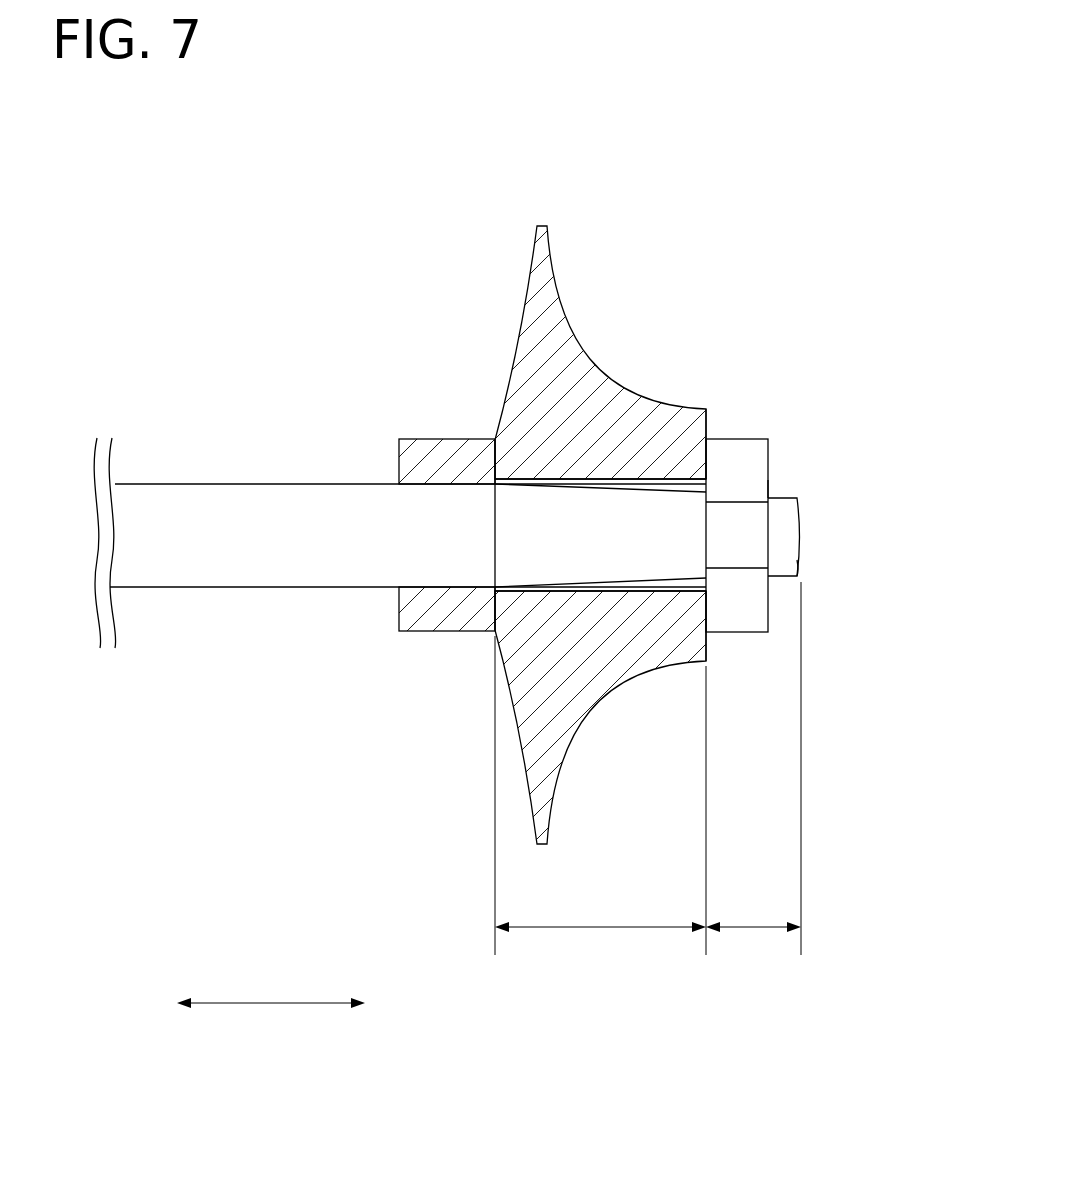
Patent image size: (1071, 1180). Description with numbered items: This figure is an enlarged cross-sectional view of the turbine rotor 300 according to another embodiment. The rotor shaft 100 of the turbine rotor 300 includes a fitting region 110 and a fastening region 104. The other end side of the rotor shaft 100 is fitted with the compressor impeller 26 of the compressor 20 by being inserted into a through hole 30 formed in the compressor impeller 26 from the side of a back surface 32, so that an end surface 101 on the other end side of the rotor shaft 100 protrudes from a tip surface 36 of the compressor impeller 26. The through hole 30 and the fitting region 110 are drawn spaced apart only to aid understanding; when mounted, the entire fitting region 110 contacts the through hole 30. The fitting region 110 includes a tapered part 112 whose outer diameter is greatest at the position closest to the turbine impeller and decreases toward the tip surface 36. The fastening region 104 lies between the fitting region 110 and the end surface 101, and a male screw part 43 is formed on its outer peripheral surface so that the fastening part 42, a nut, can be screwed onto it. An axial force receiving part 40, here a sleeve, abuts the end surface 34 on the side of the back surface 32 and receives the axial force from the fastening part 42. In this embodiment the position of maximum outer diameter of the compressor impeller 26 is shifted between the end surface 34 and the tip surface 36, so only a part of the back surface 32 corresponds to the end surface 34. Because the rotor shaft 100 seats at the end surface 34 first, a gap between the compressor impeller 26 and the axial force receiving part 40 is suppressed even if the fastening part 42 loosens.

The turbine rotor 300 is at (860, 199).
The compressor 20 is at (631, 292).
The compressor impeller 26 is at (573, 392).
The through hole 30 is at (676, 483).
The back surface 32 is at (523, 748).
The end surface 34 is at (490, 608).
The tip surface 36 is at (707, 645).
The axial force receiving part 40 is at (432, 455).
The fastening part 42 is at (737, 439).
The male screw part 43 is at (777, 489).
The rotor shaft 100 is at (250, 568).
The end surface 101 is at (802, 570).
The fastening region 104 is at (788, 540).
The fitting region 110 is at (636, 537).
The tapered part 112 is at (700, 580).